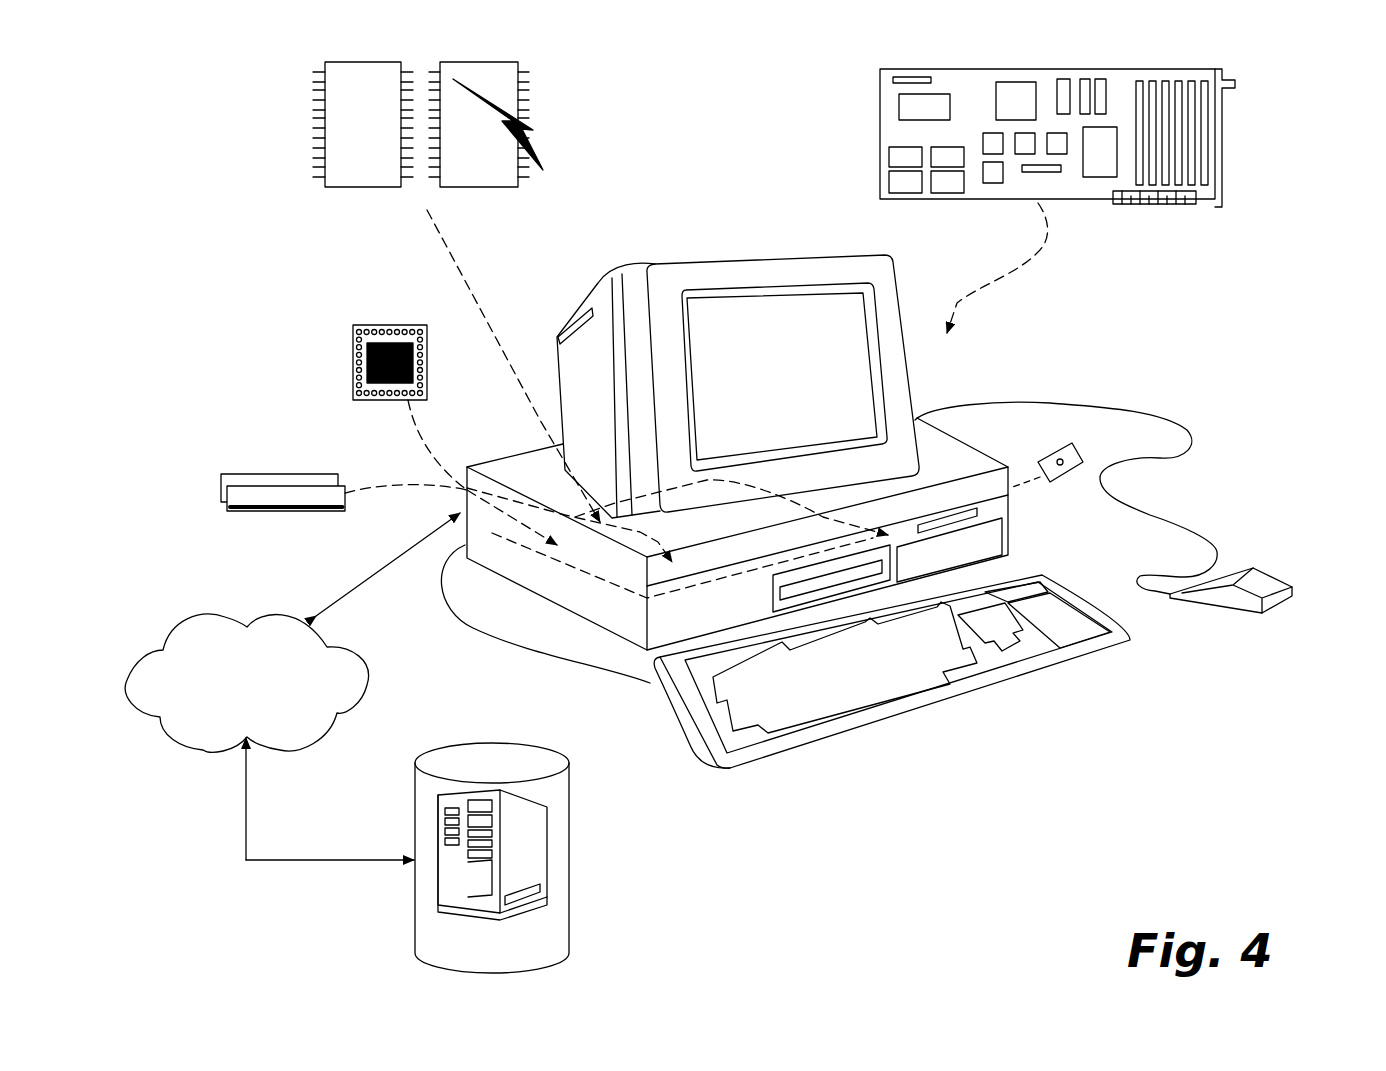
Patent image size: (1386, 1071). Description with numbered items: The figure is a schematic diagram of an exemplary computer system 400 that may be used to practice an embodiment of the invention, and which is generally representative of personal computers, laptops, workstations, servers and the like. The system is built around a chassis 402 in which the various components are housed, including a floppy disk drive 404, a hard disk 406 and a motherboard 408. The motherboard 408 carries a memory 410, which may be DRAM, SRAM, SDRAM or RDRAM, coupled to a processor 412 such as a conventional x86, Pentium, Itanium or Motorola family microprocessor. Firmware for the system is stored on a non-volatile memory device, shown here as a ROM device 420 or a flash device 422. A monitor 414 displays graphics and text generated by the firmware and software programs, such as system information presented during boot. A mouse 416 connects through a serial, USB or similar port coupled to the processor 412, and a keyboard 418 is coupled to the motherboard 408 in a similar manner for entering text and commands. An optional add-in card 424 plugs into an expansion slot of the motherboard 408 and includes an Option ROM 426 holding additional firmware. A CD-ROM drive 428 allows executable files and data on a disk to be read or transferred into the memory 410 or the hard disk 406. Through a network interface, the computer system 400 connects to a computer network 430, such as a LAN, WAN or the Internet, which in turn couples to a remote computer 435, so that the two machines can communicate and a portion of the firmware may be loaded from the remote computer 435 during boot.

The computer system 400 is at (868, 830).
The chassis 402 is at (1012, 487).
The floppy disk drive 404 is at (963, 500).
The hard disk 406 is at (973, 543).
The motherboard 408 is at (582, 570).
The memory 410 is at (250, 483).
The processor 412 is at (427, 380).
The monitor 414 is at (900, 327).
The mouse 416 is at (1267, 613).
The keyboard 418 is at (998, 687).
The ROM device 420 is at (362, 176).
The flash device 422 is at (484, 176).
The add-in card 424 is at (1222, 125).
The Option ROM 426 is at (908, 110).
The CD-ROM drive 428 is at (773, 593).
The computer network 430 is at (288, 735).
The remote computer 435 is at (570, 818).